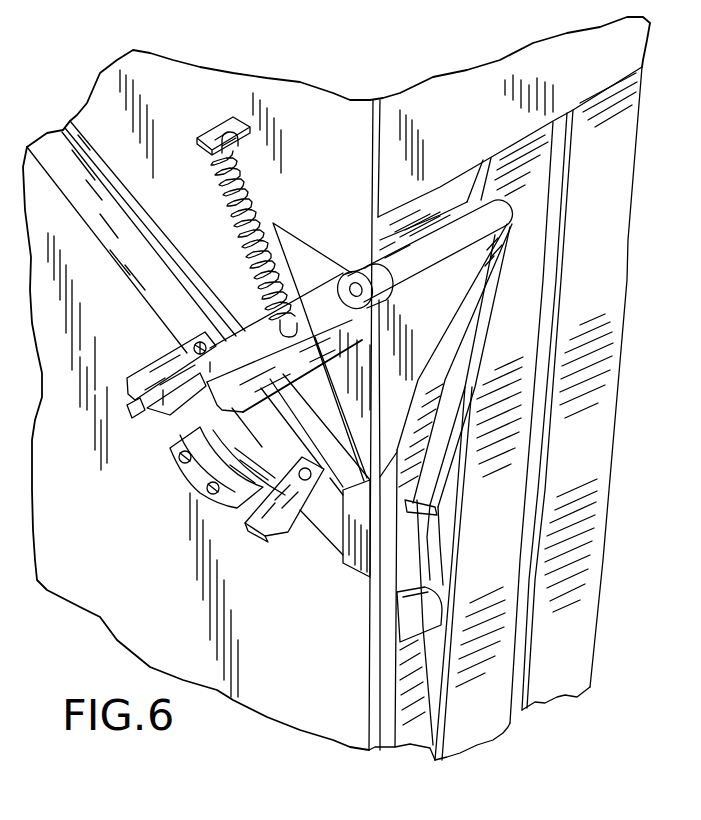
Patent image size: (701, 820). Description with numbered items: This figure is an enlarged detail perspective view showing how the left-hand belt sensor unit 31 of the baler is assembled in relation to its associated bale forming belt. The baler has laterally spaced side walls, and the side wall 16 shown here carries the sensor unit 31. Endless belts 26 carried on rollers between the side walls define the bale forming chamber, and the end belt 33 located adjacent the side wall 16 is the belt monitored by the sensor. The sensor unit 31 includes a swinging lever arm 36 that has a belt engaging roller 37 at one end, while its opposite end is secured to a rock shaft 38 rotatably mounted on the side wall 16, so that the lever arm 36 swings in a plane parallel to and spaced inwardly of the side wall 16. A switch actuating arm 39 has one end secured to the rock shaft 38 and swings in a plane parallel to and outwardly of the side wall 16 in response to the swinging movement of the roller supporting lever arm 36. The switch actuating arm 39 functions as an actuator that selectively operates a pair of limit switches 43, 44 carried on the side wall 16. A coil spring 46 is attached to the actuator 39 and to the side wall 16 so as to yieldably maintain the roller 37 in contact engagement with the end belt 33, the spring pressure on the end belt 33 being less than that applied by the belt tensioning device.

The side wall 16 is at (202, 90).
The endless belts 26 is at (587, 447).
The belt sensor unit 31 is at (187, 480).
The end belt 33 is at (418, 727).
The swinging lever arm 36 is at (467, 333).
The belt engaging roller 37 is at (398, 612).
The rock shaft 38 is at (347, 270).
The switch actuating arm 39 is at (277, 347).
The limit switch 43 is at (253, 530).
The limit switch 44 is at (128, 413).
The coil spring 46 is at (257, 203).